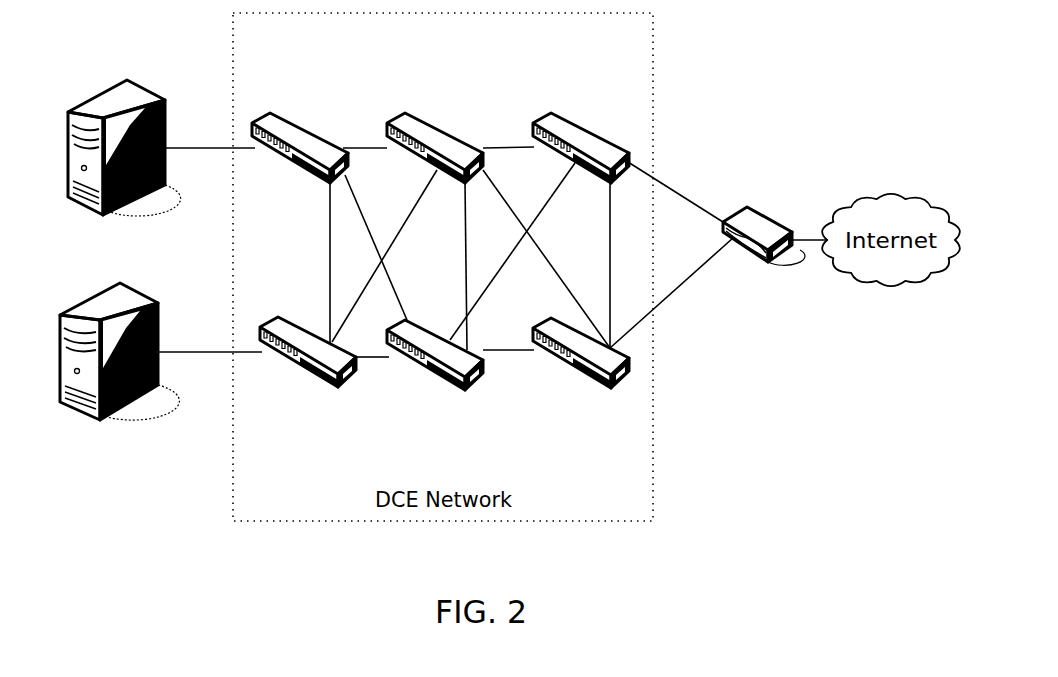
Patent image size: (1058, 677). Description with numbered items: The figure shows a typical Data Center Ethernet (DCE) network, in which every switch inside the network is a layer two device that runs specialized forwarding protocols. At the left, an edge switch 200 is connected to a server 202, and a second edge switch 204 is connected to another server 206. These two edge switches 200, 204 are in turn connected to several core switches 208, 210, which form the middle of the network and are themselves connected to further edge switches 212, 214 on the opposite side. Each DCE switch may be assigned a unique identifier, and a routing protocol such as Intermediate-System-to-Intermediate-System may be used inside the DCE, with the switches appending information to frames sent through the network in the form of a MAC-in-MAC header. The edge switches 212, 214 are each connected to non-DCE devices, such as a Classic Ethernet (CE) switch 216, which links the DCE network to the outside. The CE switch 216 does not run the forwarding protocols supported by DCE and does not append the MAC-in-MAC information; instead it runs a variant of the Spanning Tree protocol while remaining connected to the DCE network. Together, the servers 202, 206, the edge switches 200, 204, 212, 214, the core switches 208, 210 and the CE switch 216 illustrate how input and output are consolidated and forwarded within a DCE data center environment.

The edge switch 200 is at (310, 133).
The server 202 is at (152, 87).
The edge switch 204 is at (302, 330).
The server 206 is at (162, 309).
The core switch 208 is at (447, 133).
The core switch 210 is at (425, 323).
The edge switch 212 is at (587, 128).
The edge switch 214 is at (570, 323).
The Classic Ethernet (CE) switch 216 is at (773, 213).